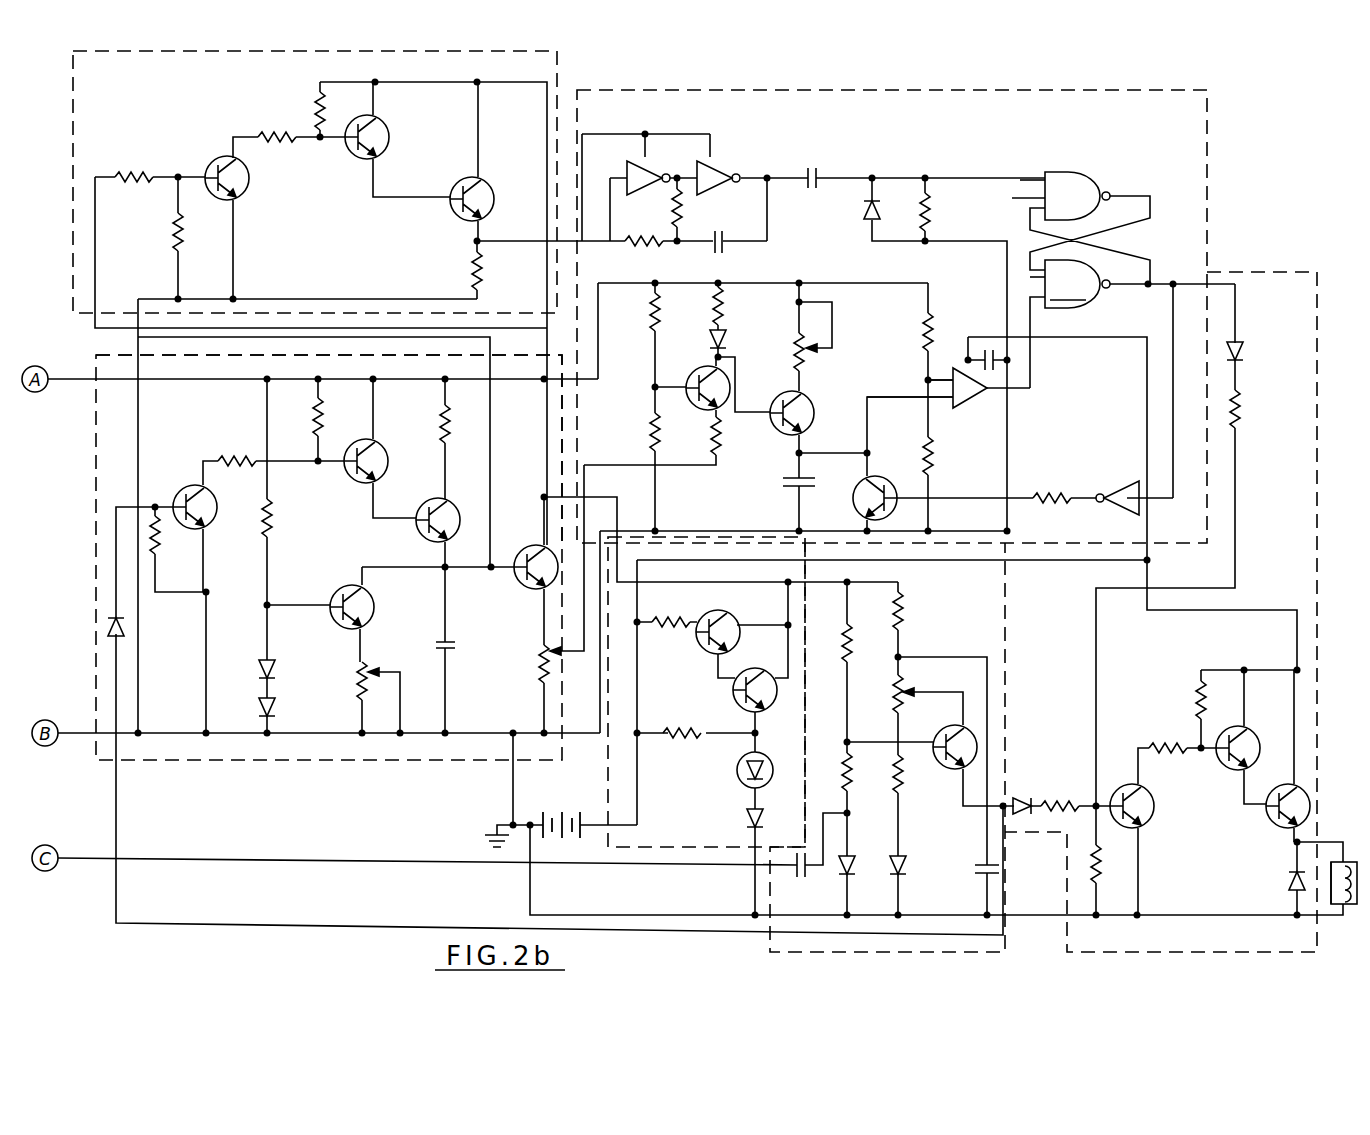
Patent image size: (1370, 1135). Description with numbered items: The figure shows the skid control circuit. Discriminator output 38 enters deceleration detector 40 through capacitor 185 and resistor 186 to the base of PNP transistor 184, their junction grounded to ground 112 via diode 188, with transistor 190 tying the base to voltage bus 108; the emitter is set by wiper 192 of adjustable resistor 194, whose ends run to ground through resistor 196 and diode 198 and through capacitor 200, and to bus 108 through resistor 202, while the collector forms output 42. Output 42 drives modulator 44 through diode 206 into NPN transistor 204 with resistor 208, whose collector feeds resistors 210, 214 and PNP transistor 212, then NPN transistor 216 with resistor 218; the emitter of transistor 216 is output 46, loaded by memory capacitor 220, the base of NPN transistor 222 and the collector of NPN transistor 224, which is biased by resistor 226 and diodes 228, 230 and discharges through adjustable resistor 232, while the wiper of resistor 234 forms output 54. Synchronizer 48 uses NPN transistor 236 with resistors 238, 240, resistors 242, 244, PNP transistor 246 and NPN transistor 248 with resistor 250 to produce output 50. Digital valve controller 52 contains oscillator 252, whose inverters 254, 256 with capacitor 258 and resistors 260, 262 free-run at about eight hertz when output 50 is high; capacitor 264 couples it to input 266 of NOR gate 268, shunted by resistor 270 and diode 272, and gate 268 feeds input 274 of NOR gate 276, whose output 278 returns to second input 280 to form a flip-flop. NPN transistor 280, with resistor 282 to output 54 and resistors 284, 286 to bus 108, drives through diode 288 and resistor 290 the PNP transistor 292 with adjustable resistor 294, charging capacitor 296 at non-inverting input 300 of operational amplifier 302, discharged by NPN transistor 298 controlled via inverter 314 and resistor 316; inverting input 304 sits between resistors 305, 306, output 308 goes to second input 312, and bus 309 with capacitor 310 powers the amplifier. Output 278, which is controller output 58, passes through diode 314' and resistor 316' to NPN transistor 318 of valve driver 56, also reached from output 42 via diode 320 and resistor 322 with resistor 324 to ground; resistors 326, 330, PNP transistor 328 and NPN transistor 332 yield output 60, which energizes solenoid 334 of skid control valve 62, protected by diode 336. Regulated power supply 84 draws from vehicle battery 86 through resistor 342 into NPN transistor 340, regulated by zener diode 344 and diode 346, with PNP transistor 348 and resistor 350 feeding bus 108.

The discriminator output 38 is at (244, 860).
The deceleration detector 40 is at (1000, 953).
The detector output 42 is at (1006, 800).
The modulator 44 is at (96, 522).
The modulator output 46 is at (497, 355).
The synchronizer 48 is at (73, 240).
The synchronizer output 50 is at (505, 241).
The digital valve controller 52 is at (882, 91).
The modulator output 54 is at (560, 660).
The valve driver 56 is at (1317, 593).
The controller output 58 is at (1173, 284).
The valve driver output 60 is at (1326, 842).
The skid control valve 62 is at (1333, 904).
The regulated power supply 84 is at (693, 847).
The vehicle battery 86 is at (555, 806).
The voltage bus 108 is at (398, 83).
The ground 112 is at (352, 298).
The PNP transistor 184 is at (943, 768).
The capacitor 185 is at (807, 880).
The resistor 186 is at (846, 765).
The diode 188 is at (857, 856).
The transistor 190 is at (852, 645).
The wiper 192 is at (938, 692).
The adjustable resistor 194 is at (893, 688).
The resistor 196 is at (894, 780).
The diode 198 is at (912, 861).
The capacitor 200 is at (976, 872).
The resistor 202 is at (904, 603).
The NPN transistor 204 is at (189, 487).
The diode 206 is at (108, 630).
The resistor 208 is at (158, 545).
The resistor 210 is at (243, 455).
The PNP transistor 212 is at (384, 451).
The resistor 214 is at (324, 415).
The NPN transistor 216 is at (416, 538).
The resistor 218 is at (441, 442).
The memory capacitor 220 is at (456, 645).
The NPN transistor 222 is at (522, 586).
The NPN transistor 224 is at (375, 603).
The resistor 226 is at (276, 521).
The diode 228 is at (278, 667).
The diode 230 is at (278, 710).
The adjustable resistor 232 is at (380, 670).
The resistor 234 is at (536, 660).
The NPN transistor 236 is at (210, 160).
The resistor 238 is at (128, 172).
The resistor 240 is at (175, 232).
The resistor 242 is at (275, 130).
The resistor 244 is at (318, 110).
The PNP transistor 246 is at (390, 137).
The NPN transistor 248 is at (486, 188).
The resistor 250 is at (470, 272).
The oscillator 252 is at (733, 165).
The inverter 254 is at (650, 195).
The inverter 256 is at (727, 189).
The capacitor 258 is at (722, 255).
The resistor 260 is at (650, 248).
The resistor 262 is at (688, 212).
The capacitor 264 is at (826, 180).
The input 266 is at (1043, 180).
The NOR gate 268 is at (1075, 188).
The resistor 270 is at (935, 210).
The diode 272 is at (862, 212).
The input 274 is at (1045, 277).
The NOR gate 276 is at (1077, 284).
The gate output 278 is at (1112, 288).
The second gate input; NPN transistor 280 is at (700, 372).
The resistor 282 is at (722, 438).
The resistor 284 is at (652, 445).
The resistor 286 is at (652, 311).
The diode 288 is at (730, 340).
The resistor 290 is at (730, 300).
The PNP transistor 292 is at (814, 420).
The adjustable resistor 294 is at (810, 358).
The capacitor 296 is at (785, 480).
The NPN transistor 298 is at (885, 482).
The non-inverting input 300 is at (960, 410).
The operational amplifier 302 is at (976, 408).
The inverting input 304 is at (972, 368).
The resistor 305 is at (931, 460).
The resistor 306 is at (925, 338).
The output 308 is at (992, 390).
The bus 309 is at (1069, 562).
The capacitor 310 is at (978, 348).
The second input 312 is at (1032, 300).
The inverter 314 is at (1112, 480).
The diode 314' is at (1261, 353).
The resistor 316 is at (1048, 484).
The resistor 316' is at (1263, 414).
The NPN transistor 318 is at (1147, 824).
The diode 320 is at (1023, 798).
The resistor 322 is at (1056, 800).
The resistor 324 is at (1090, 878).
The resistor 326 is at (1160, 745).
The PNP transistor 328 is at (1221, 763).
The resistor 330 is at (1197, 701).
The NPN transistor 332 is at (1267, 822).
The solenoid 334 is at (1351, 906).
The diode 336 is at (1289, 884).
The NPN transistor 340 is at (733, 702).
The resistor 342 is at (675, 745).
The regulating zener diode 344 is at (736, 775).
The diode 346 is at (744, 818).
The PNP transistor 348 is at (733, 619).
The resistor 350 is at (670, 620).